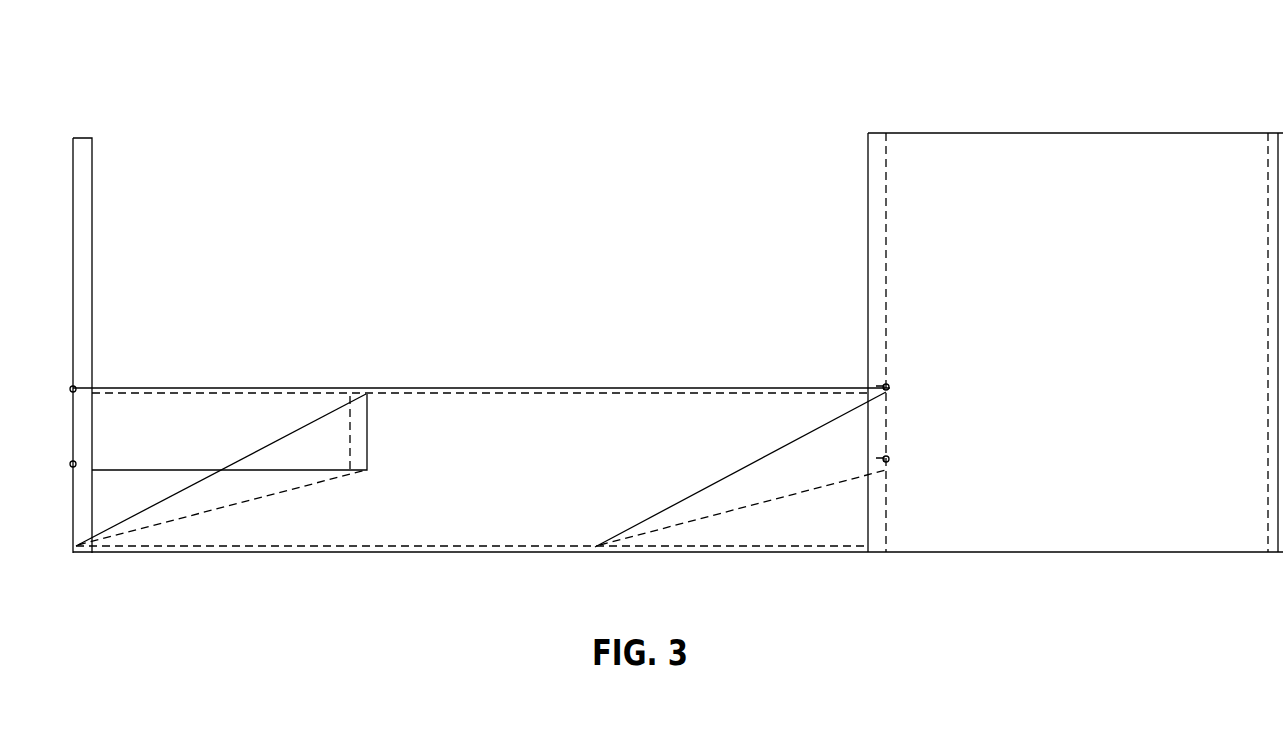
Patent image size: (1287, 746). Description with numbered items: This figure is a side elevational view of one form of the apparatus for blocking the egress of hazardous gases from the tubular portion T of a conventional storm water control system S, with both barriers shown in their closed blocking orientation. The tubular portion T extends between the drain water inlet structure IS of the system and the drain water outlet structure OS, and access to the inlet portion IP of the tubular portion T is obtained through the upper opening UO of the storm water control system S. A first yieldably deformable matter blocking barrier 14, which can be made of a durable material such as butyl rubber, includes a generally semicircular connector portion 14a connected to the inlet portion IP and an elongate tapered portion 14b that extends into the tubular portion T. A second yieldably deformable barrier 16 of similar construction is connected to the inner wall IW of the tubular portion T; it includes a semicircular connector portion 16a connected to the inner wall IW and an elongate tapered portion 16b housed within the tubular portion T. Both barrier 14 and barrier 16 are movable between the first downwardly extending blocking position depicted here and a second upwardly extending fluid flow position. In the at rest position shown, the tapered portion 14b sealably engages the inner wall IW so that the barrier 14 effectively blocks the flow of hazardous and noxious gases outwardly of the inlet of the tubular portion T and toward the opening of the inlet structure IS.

The storm water control system S is at (668, 212).
The drain water outlet structure OS is at (93, 183).
The inner wall IW is at (160, 549).
The tubular portion T is at (518, 388).
The drain water inlet structure IS is at (1043, 132).
The upper opening UO is at (963, 121).
The inlet portion IP is at (889, 421).
The second yieldably deformable barrier 16 is at (294, 456).
The semicircular connector portion 16a is at (357, 388).
The elongate tapered portion 16b is at (233, 462).
The first yieldably deformable matter blocking barrier 14 is at (818, 462).
The semicircular connector portion 14a is at (890, 447).
The elongate tapered portion 14b is at (745, 510).